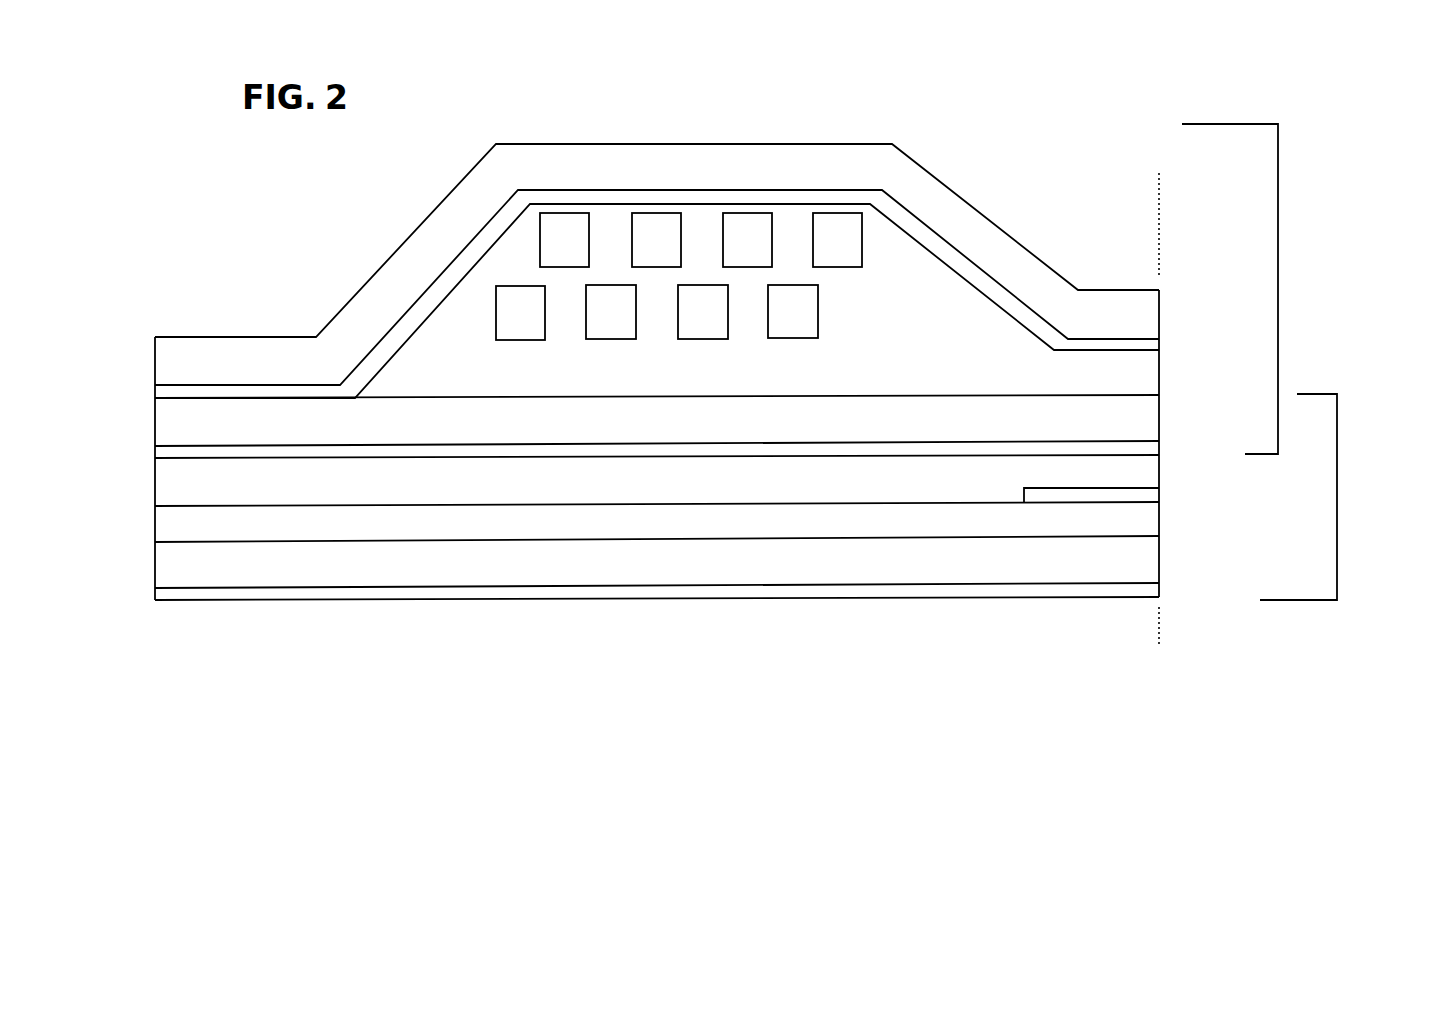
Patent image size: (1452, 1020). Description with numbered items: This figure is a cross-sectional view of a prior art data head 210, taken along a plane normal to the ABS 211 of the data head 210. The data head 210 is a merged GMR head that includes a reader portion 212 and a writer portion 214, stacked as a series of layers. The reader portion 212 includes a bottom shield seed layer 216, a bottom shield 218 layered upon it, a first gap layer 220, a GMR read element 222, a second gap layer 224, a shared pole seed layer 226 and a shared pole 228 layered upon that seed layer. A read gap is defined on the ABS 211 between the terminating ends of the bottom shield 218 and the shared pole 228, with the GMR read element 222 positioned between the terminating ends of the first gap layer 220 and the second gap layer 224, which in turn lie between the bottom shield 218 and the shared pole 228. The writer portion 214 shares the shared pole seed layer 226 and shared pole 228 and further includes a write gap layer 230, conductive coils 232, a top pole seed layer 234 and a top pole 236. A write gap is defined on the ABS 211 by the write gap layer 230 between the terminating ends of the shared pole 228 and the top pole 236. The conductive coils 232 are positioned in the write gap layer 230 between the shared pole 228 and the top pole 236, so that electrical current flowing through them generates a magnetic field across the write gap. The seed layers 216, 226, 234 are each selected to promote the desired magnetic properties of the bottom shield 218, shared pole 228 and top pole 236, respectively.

The data head 210 is at (228, 235).
The ABS 211 is at (1157, 625).
The reader portion 212 is at (1337, 497).
The writer portion 214 is at (1278, 290).
The bottom shield seed layer 216 is at (1153, 588).
The bottom shield 218 is at (1150, 573).
The first gap layer 220 is at (1148, 532).
The GMR read element 222 is at (1152, 493).
The second gap layer 224 is at (1148, 483).
The shared pole seed layer 226 is at (1232, 463).
The shared pole 228 is at (1145, 432).
The write gap layer 230 is at (1148, 385).
The conductive coils 232 is at (587, 254).
The top pole seed layer 234 is at (1232, 369).
The top pole 236 is at (1145, 330).